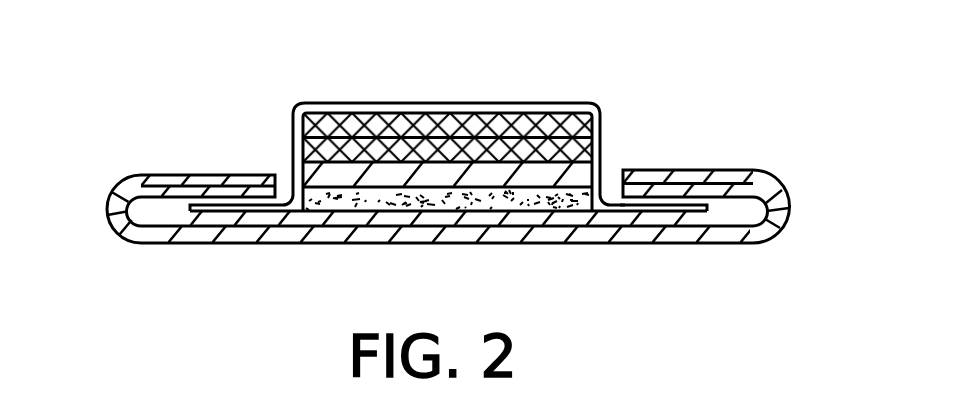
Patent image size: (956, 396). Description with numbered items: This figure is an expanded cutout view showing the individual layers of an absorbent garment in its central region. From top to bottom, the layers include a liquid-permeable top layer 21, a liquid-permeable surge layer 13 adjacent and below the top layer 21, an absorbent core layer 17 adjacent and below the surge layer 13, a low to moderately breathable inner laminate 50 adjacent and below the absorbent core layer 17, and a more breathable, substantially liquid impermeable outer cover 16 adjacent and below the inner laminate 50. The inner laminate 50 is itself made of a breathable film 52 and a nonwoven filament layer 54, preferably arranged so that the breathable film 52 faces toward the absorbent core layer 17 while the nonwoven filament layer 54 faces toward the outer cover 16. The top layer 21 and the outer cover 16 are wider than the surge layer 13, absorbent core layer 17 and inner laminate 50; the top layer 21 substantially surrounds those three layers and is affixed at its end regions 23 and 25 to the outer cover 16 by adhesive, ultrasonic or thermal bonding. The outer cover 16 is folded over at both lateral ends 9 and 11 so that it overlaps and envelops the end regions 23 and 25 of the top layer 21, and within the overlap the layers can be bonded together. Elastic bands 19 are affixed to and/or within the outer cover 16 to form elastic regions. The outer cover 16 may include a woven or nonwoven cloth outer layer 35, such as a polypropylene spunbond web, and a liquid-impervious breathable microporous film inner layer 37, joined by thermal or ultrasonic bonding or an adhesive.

The lateral end 9 is at (126, 184).
The lateral end 11 is at (789, 196).
The surge layer 13 is at (598, 125).
The outer cover 16 is at (743, 243).
The absorbent core layer 17 is at (602, 170).
The elastic band 19 is at (727, 172).
The top layer 21 is at (553, 106).
The end region 23 is at (213, 208).
The end region 25 is at (688, 212).
The cloth outer layer 35 is at (543, 243).
The breathable film inner layer 37 is at (778, 222).
The inner laminate 50 is at (604, 188).
The breathable film 52 is at (290, 182).
The nonwoven filament layer 54 is at (287, 193).